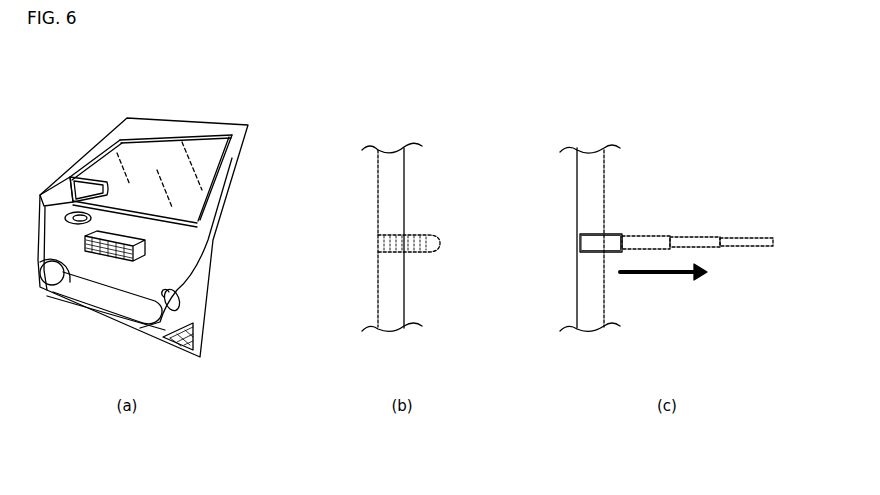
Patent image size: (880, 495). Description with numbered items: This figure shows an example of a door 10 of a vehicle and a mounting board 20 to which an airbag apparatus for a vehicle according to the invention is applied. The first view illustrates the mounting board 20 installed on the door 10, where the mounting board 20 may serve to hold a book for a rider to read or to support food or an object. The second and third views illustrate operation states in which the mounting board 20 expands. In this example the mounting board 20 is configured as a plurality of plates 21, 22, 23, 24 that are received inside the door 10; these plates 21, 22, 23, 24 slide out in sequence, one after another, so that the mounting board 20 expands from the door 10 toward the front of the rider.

The door 10 is at (127, 118).
The mounting board 20 is at (155, 258).
The plate 21 is at (620, 233).
The plate 22 is at (661, 235).
The plate 23 is at (703, 236).
The plate 24 is at (746, 198).